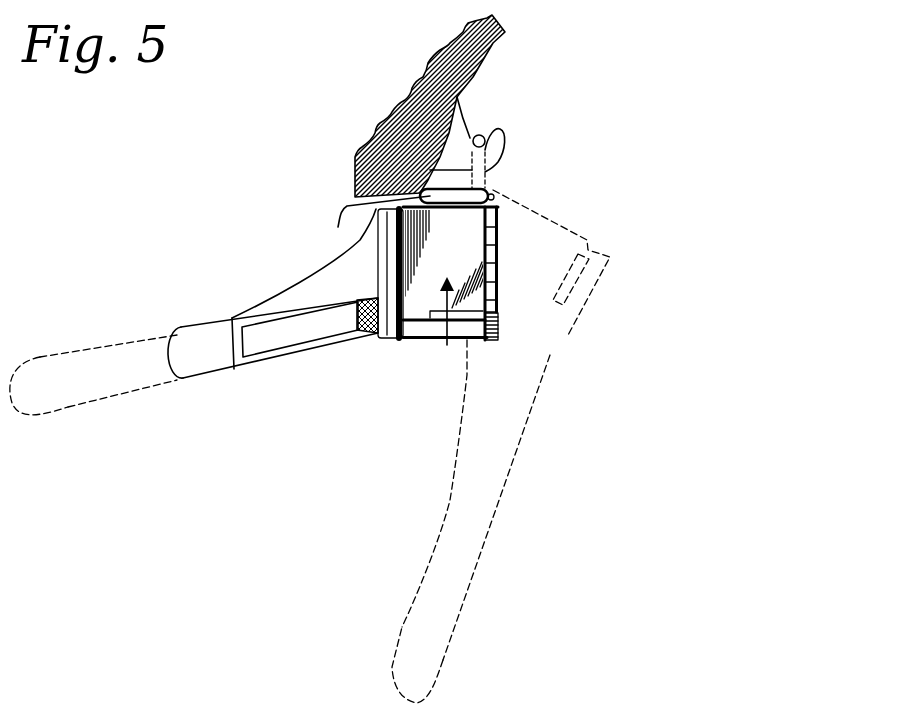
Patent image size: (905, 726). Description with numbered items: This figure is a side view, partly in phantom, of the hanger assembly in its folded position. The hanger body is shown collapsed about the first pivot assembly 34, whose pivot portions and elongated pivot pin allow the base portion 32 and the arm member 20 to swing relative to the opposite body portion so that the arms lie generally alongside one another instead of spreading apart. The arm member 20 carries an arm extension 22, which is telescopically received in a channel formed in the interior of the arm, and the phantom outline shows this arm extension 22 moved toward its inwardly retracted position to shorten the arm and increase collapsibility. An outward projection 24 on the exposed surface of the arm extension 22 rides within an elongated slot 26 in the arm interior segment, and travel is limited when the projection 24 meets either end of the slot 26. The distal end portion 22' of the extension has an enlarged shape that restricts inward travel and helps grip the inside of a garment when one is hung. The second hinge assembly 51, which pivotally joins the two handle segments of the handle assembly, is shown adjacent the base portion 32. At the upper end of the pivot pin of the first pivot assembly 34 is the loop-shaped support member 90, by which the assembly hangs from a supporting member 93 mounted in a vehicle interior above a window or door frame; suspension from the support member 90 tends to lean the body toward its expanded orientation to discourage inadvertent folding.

The arm member 20 is at (297, 291).
The arm extension 22 is at (288, 519).
The distal end portion 22' is at (123, 329).
The outward projection 24 is at (372, 336).
The elongated slot 26 is at (281, 343).
The base portion 32 is at (447, 345).
The first pivot assembly 34 is at (508, 266).
The second hinge assembly 51 is at (507, 326).
The support member 90 is at (527, 152).
The supporting member 93 is at (499, 129).